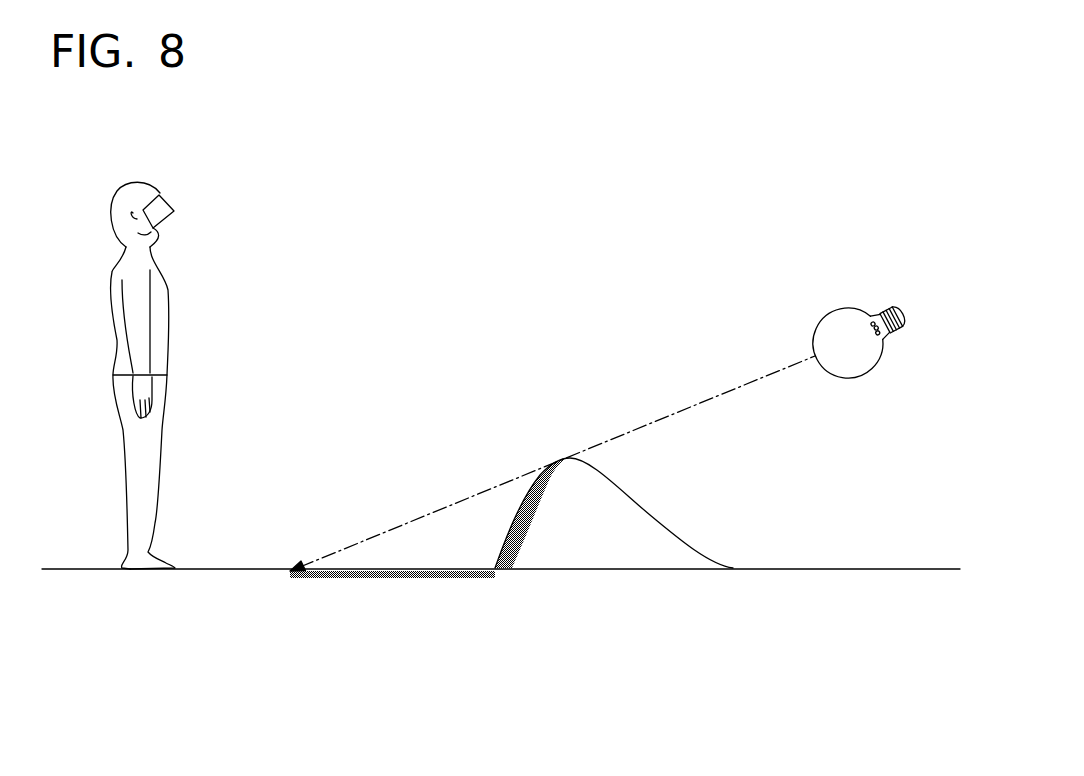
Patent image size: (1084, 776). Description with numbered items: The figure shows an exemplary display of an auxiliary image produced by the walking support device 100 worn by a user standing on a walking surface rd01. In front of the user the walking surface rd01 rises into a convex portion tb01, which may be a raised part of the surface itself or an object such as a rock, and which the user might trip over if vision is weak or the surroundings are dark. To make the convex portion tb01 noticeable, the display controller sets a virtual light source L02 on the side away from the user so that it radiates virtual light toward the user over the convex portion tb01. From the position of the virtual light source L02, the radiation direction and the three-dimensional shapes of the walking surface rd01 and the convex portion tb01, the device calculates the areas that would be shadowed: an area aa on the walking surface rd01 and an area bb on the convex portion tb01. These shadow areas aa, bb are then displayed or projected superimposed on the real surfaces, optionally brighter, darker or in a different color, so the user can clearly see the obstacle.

The walking support device 100 is at (168, 203).
The virtual light source L02 is at (836, 306).
The walking surface rd01 is at (235, 572).
The area on the walking surface aa is at (402, 578).
The area on the convex portion bb is at (532, 505).
The convex portion tb01 is at (630, 543).